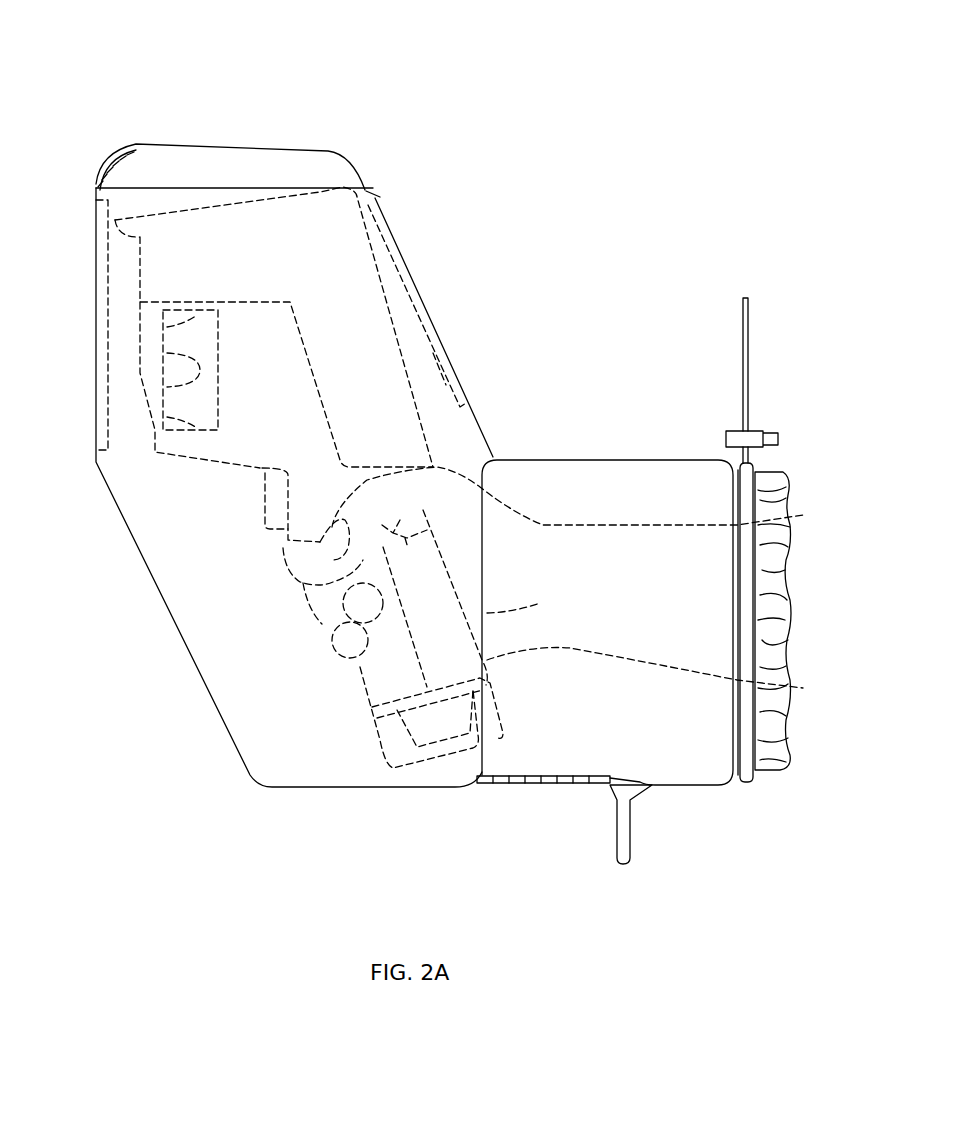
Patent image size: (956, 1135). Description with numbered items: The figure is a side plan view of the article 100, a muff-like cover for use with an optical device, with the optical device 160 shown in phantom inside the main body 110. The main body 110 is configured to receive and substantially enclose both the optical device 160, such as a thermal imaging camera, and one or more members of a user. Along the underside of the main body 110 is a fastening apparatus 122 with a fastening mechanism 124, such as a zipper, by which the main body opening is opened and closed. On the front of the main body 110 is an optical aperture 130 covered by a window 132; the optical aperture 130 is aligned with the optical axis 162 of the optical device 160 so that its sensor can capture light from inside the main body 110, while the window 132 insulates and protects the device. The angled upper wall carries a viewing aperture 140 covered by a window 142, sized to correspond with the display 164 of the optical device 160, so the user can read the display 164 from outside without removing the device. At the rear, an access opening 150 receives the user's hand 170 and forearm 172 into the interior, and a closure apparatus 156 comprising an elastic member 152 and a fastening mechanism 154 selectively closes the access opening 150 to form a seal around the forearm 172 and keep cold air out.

The article 100 is at (138, 56).
The main body 110 is at (222, 638).
The fastening apparatus 122 is at (532, 795).
The fastening mechanism 124 is at (617, 837).
The optical aperture 130 is at (70, 255).
The window 132 is at (103, 423).
The viewing aperture 140 is at (433, 232).
The window 142 is at (413, 297).
The access opening 150 is at (808, 728).
The elastic member 152 is at (750, 332).
The fastening mechanism 154 is at (753, 437).
The closure apparatus 156 is at (750, 795).
The optical device 160 is at (217, 245).
The optical axis 162 is at (152, 372).
The display 164 is at (417, 365).
The hand 170 is at (448, 492).
The forearm 172 is at (632, 612).